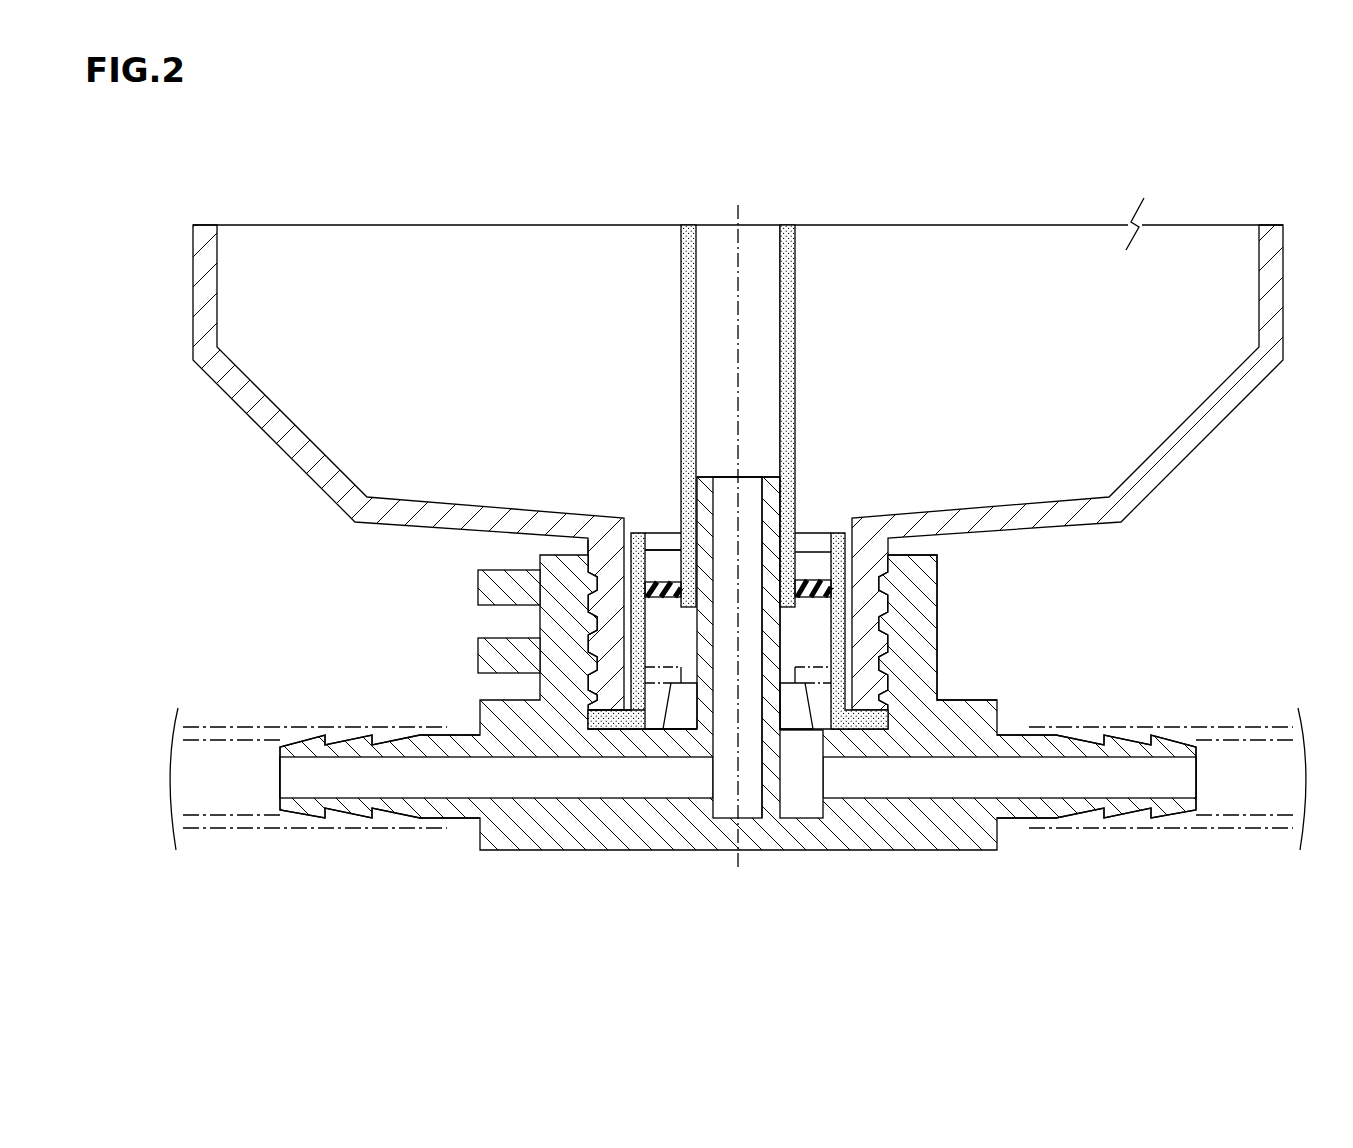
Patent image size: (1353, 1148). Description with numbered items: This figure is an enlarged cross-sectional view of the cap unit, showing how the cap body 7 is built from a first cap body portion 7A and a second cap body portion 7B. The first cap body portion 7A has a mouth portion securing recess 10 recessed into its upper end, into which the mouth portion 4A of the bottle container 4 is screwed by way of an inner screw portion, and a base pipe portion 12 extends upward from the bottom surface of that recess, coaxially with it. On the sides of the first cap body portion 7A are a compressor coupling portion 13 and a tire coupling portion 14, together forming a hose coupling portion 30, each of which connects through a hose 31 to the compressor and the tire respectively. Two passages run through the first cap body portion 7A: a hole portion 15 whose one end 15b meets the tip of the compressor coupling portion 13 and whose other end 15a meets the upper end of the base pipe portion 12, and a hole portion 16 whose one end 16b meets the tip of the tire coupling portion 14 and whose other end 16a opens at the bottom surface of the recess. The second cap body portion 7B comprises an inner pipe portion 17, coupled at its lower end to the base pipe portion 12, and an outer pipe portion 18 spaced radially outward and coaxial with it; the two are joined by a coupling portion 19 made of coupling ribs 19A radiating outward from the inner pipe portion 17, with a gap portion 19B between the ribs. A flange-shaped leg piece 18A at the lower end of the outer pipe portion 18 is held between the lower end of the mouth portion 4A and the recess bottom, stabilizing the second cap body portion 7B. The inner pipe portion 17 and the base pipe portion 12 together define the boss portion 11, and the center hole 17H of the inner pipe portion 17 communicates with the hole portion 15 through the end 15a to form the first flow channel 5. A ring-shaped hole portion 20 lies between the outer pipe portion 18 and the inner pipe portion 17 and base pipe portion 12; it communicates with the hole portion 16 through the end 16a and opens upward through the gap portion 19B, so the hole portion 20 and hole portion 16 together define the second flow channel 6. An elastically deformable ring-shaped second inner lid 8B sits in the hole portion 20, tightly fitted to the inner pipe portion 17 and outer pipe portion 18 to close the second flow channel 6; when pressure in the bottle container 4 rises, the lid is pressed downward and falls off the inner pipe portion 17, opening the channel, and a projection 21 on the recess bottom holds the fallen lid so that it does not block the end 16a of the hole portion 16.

The second inner lid 8B is at (820, 577).
The mouth portion 4A is at (605, 633).
The bottle container 4 is at (592, 625).
The cap body 7 is at (1077, 535).
The second cap body portion 7B is at (838, 563).
The first cap body portion 7A is at (920, 590).
The second flow channel 6 is at (890, 905).
The hole portion 16 is at (738, 732).
The projection 21 is at (916, 600).
The hose coupling portion 30 is at (738, 822).
The compressor coupling portion 13 is at (358, 803).
The tire coupling portion 14 is at (1118, 803).
The first flow channel 5 is at (807, 157).
The hole portion 15 is at (713, 537).
The another end of hole portion 15 15a is at (752, 473).
The center hole 17H is at (778, 275).
The another end of hole portion 16 16a is at (798, 728).
The boss portion 11 is at (965, 157).
The inner pipe portion 17 is at (788, 330).
The base pipe portion 12 is at (768, 517).
The outer pipe portion 18 is at (640, 568).
The leg piece 18A is at (617, 717).
The coupling portion 19 is at (675, 328).
The coupling ribs 19A is at (667, 530).
The gap portion 19B is at (675, 527).
The hole portion 20 is at (667, 645).
The mouth portion securing recess 10 is at (653, 733).
The one end of hole portion 15 15b is at (276, 772).
The one end of hole portion 16 16b is at (1200, 772).
The hose 31 is at (230, 830).